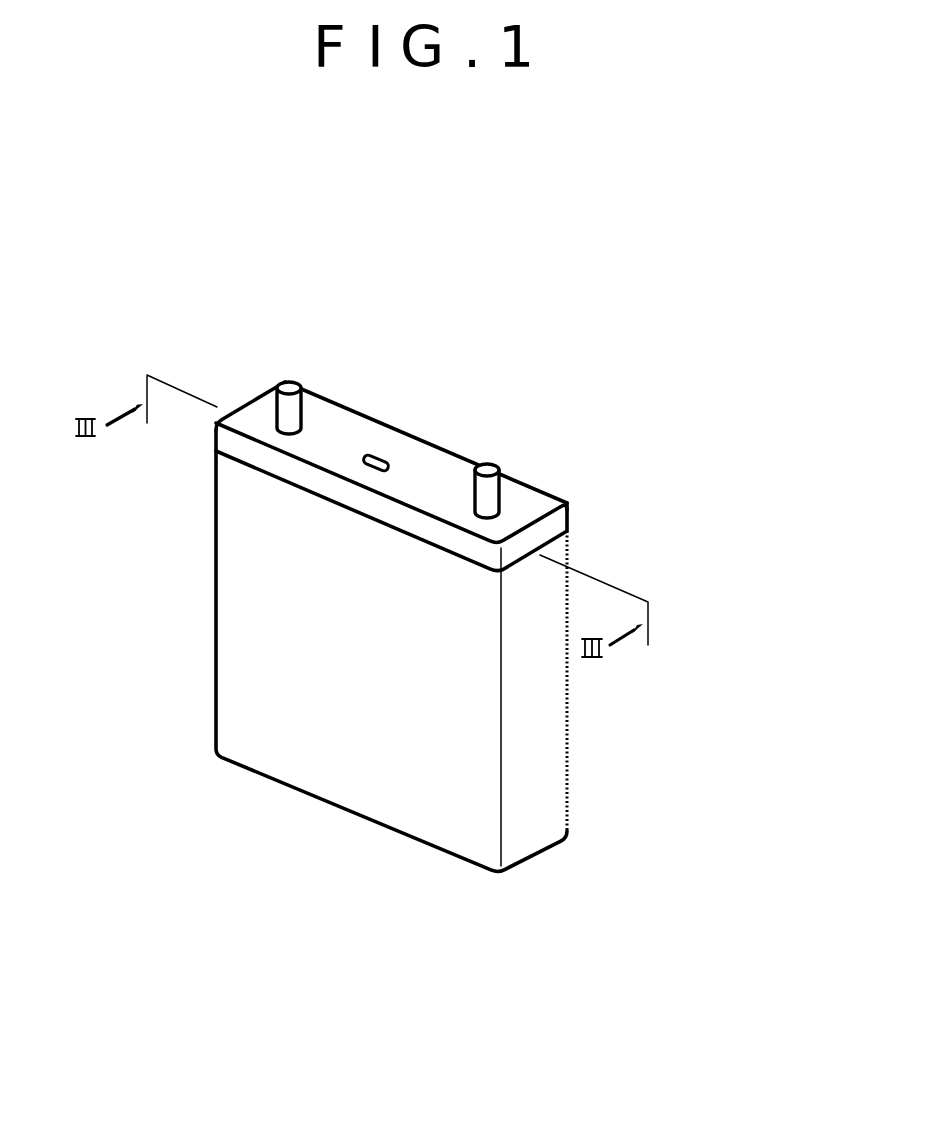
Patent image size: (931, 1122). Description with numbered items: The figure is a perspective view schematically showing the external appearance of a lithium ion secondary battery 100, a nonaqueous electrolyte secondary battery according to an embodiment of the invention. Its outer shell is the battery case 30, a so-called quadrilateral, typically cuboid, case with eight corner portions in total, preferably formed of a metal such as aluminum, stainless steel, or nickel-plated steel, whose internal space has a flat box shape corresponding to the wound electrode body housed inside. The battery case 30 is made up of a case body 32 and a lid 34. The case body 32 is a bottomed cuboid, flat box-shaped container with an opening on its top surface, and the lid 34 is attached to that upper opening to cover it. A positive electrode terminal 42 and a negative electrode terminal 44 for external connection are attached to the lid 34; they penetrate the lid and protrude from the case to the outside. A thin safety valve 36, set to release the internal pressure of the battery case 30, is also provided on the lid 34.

The lithium ion secondary battery 100 is at (507, 562).
The battery case 30 is at (457, 613).
The case body 32 is at (558, 790).
The lid 34 is at (457, 455).
The safety valve 36 is at (376, 457).
The positive electrode terminal 42 is at (289, 382).
The negative electrode terminal 44 is at (488, 466).